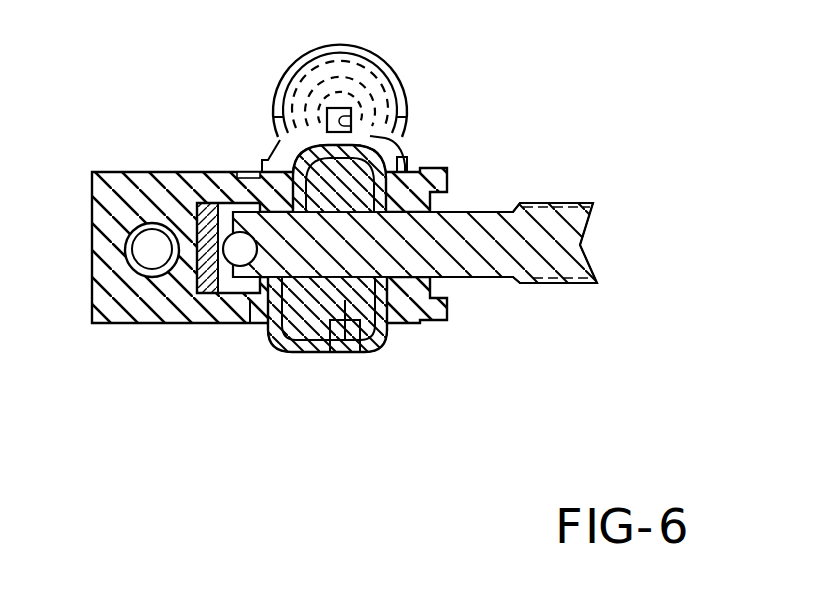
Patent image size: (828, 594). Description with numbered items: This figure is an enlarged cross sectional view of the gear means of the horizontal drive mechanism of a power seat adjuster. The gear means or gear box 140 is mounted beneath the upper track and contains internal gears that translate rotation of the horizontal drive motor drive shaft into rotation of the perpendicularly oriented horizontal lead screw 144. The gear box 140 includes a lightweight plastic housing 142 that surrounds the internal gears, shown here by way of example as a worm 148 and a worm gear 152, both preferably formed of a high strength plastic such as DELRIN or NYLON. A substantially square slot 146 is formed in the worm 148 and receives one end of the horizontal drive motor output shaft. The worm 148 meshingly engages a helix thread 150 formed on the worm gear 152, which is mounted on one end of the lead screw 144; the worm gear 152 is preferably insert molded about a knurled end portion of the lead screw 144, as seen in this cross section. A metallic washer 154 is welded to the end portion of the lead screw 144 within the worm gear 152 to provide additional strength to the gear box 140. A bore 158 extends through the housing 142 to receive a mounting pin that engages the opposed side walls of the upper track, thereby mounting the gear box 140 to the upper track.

The gear box 140 is at (137, 122).
The housing 142 is at (206, 172).
The horizontal lead screw 144 is at (530, 226).
The square slot 146 is at (351, 123).
The worm 148 is at (336, 93).
The helix thread 150 is at (350, 340).
The worm gear 152 is at (310, 345).
The metallic washer 154 is at (345, 320).
The bore 158 is at (153, 262).